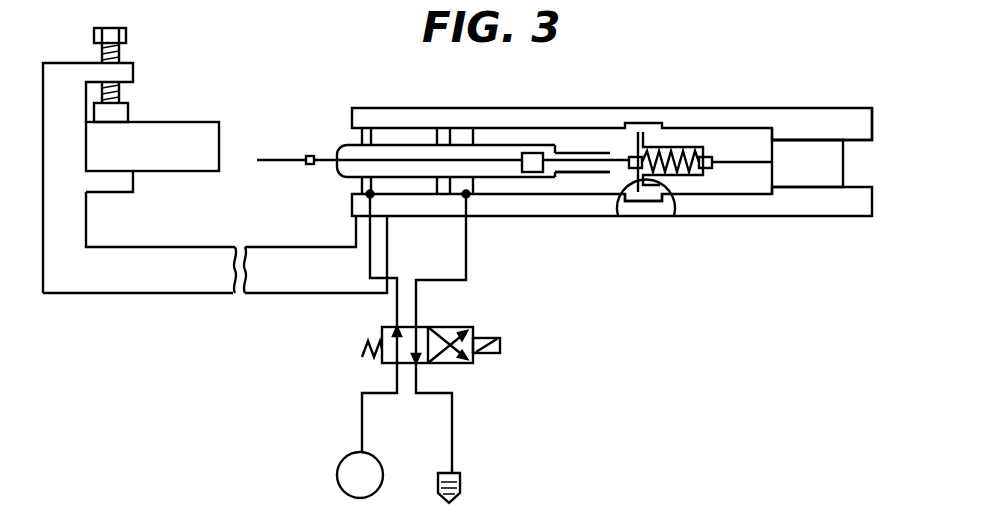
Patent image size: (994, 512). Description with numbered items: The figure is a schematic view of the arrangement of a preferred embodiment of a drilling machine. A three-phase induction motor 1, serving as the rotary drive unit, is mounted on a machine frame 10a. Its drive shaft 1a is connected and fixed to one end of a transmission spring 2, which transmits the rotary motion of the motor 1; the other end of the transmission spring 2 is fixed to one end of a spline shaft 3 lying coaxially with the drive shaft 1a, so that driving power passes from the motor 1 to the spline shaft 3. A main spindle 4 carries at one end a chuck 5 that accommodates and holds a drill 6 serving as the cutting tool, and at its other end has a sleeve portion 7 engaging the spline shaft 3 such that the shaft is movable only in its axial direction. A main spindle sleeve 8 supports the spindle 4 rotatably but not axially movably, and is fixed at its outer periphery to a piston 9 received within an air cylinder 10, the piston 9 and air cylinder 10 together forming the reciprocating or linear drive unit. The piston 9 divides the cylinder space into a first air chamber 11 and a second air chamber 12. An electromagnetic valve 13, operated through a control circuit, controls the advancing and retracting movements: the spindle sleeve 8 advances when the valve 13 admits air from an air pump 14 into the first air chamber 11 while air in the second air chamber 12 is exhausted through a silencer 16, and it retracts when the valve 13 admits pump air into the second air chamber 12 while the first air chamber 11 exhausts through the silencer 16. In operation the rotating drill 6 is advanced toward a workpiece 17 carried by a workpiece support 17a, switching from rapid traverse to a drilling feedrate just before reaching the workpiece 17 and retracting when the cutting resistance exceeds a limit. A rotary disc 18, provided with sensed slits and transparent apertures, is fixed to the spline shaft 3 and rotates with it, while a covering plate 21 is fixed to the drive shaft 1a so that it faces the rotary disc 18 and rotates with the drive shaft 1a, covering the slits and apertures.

The three-phase induction motor 1 is at (803, 177).
The drive shaft 1a is at (741, 161).
The transmission spring 2 is at (673, 157).
The spline shaft 3 is at (597, 153).
The main spindle 4 is at (507, 160).
The chuck 5 is at (310, 156).
The drill 6 is at (277, 157).
The sleeve portion 7 is at (573, 175).
The main spindle sleeve 8 is at (373, 153).
The piston 9 is at (443, 133).
The air cylinder 10 is at (415, 127).
The machine frame 10a is at (842, 117).
The first air chamber 11 is at (468, 184).
The second air chamber 12 is at (380, 184).
The electromagnetic valve 13 is at (467, 327).
The air pump 14 is at (347, 465).
The silencer 16 is at (460, 482).
The workpiece 17 is at (191, 132).
The workpiece support 17a is at (61, 72).
The rotary disc 18 is at (617, 217).
The covering plate 21 is at (675, 217).